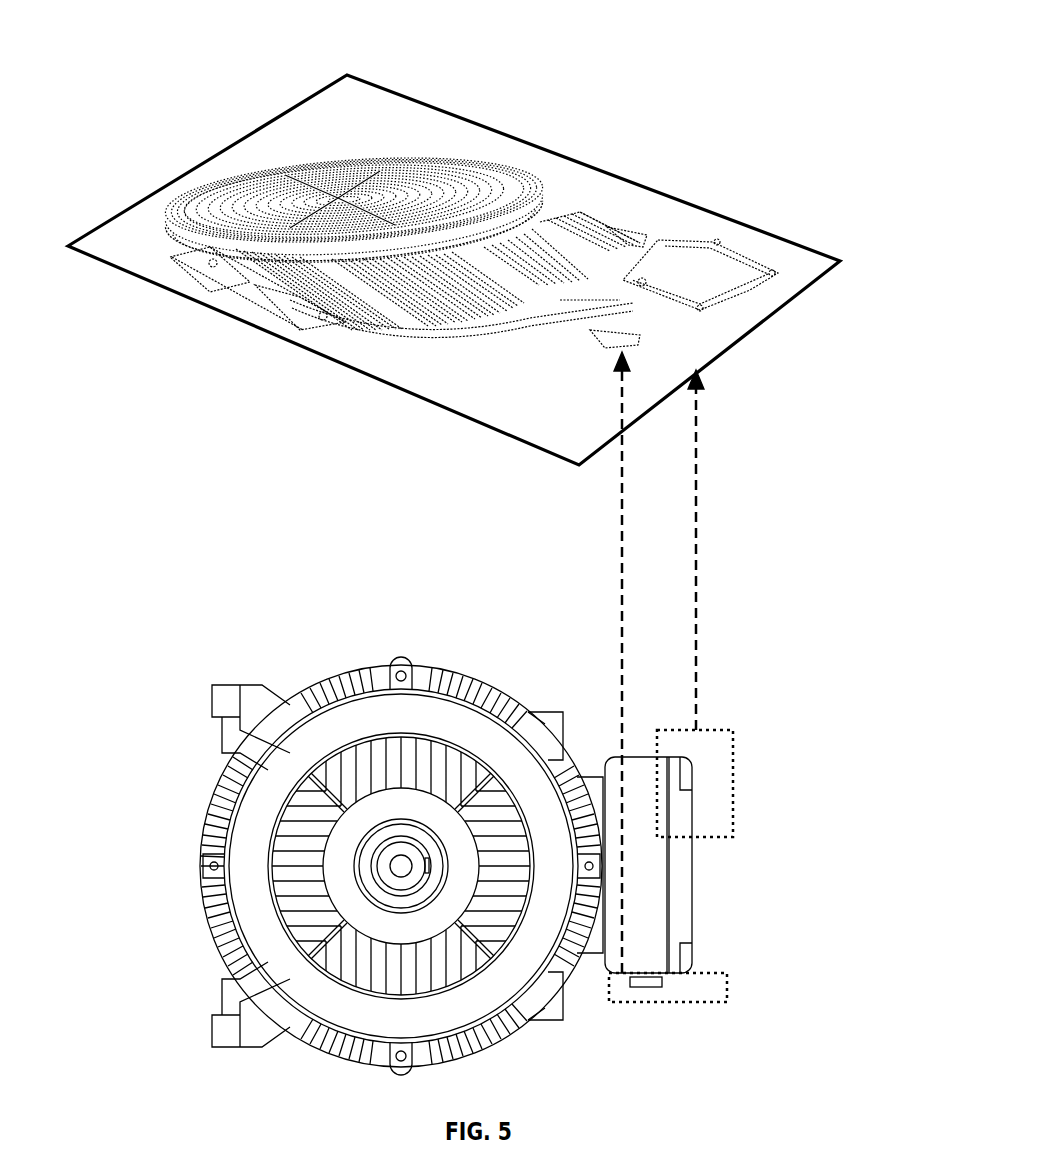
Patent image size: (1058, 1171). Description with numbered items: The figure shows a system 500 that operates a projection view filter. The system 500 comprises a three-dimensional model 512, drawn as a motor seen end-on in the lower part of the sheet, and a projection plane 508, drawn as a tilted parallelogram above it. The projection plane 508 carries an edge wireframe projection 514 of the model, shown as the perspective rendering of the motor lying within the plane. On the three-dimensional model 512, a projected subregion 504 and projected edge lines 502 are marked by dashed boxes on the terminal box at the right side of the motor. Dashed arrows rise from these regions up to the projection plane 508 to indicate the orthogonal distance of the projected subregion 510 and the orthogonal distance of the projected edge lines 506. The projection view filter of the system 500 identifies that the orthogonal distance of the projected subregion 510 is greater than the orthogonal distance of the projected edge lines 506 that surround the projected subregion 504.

The system 500 is at (826, 66).
The projected edge lines 502 is at (735, 787).
The projected subregion 504 is at (687, 990).
The orthogonal distance of projected edge lines 506 is at (697, 563).
The projection plane 508 is at (527, 29).
The orthogonal distance of projected subregion 510 is at (622, 603).
The 3D model 512 is at (505, 1108).
The edge wireframe projection 514 is at (583, 166).